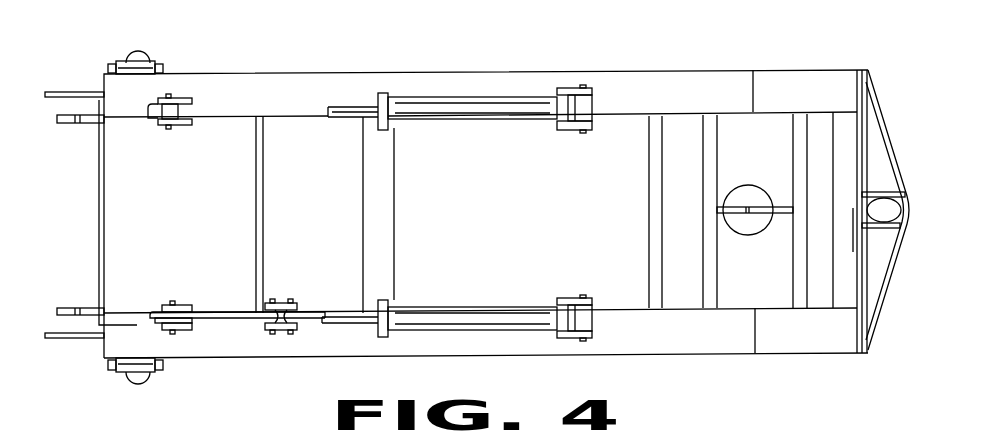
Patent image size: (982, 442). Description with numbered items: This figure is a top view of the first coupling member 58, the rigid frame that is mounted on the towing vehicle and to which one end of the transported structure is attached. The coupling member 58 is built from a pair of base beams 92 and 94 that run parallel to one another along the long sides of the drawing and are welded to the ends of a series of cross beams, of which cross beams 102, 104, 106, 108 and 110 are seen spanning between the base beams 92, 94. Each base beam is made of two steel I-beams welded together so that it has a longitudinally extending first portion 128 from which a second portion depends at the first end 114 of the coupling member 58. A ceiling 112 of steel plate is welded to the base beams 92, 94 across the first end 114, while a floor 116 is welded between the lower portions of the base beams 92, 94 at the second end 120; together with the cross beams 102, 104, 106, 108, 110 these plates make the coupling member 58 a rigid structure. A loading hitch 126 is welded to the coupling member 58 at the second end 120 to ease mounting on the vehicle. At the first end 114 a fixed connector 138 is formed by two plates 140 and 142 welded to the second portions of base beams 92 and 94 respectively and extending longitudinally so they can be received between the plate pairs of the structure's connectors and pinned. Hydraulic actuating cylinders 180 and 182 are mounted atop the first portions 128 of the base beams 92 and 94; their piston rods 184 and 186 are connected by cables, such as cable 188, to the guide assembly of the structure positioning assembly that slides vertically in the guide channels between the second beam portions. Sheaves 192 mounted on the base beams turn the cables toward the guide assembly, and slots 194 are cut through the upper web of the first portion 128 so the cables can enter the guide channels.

The first coupling member 58 is at (611, 69).
The base beam 92 is at (399, 345).
The base beam 94 is at (269, 74).
The cross beam 102 is at (375, 187).
The cross beam 104 is at (657, 130).
The cross beam 106 is at (709, 130).
The cross beam 108 is at (800, 130).
The cross beam 110 is at (843, 150).
The ceiling 112 is at (198, 222).
The first end 114 is at (103, 73).
The floor 116 is at (543, 222).
The second end 120 is at (866, 278).
The loading hitch 126 is at (882, 128).
The first portion 128 is at (528, 80).
The fixed connector 138 is at (80, 342).
The plate 140 is at (57, 340).
The plate 142 is at (96, 92).
The hydraulic actuating cylinder 180 is at (478, 318).
The hydraulic actuating cylinder 182 is at (430, 105).
The piston rod 184 is at (320, 324).
The piston rod 186 is at (345, 107).
The cable 188 is at (206, 320).
The sheave 192 is at (172, 104).
The slot 194 is at (158, 100).